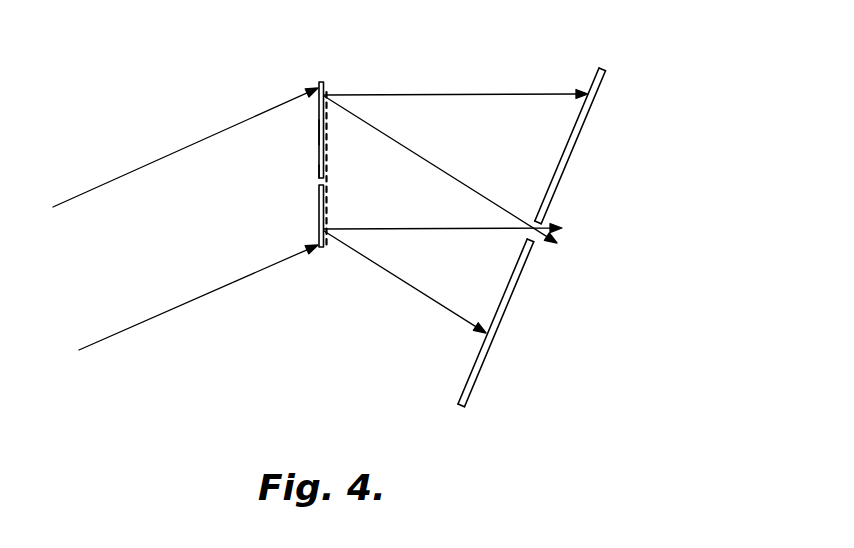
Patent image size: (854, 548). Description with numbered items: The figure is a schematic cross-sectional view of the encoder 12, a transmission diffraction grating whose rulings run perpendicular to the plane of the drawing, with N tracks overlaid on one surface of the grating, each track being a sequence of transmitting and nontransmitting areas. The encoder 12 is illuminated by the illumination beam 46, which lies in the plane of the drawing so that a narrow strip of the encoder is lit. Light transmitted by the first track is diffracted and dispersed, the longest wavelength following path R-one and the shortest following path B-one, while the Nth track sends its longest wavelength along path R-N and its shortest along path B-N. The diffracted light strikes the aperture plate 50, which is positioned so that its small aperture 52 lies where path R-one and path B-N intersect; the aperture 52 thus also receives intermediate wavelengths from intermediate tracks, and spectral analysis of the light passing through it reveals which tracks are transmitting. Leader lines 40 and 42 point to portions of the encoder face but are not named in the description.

The encoder 12 is at (320, 72).
The mirror element 40 is at (308, 131).
The mirror element 42 is at (319, 176).
The illumination beam 46 is at (133, 170).
The aperture plate 50 is at (598, 75).
The aperture 52 is at (530, 235).